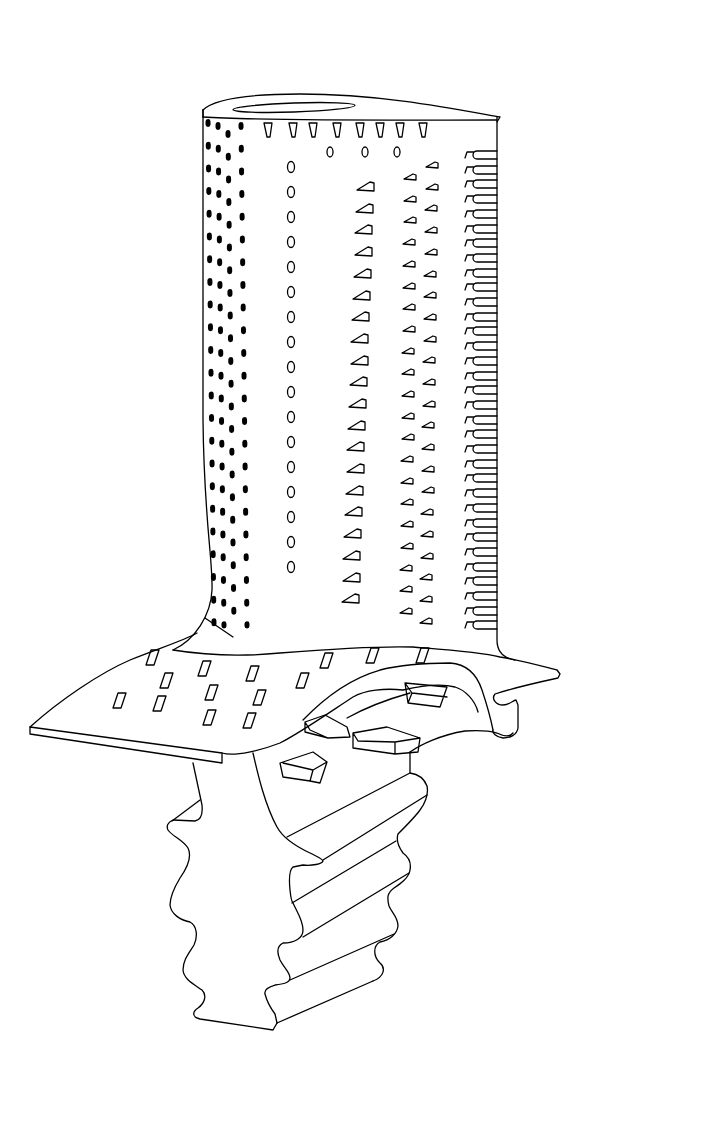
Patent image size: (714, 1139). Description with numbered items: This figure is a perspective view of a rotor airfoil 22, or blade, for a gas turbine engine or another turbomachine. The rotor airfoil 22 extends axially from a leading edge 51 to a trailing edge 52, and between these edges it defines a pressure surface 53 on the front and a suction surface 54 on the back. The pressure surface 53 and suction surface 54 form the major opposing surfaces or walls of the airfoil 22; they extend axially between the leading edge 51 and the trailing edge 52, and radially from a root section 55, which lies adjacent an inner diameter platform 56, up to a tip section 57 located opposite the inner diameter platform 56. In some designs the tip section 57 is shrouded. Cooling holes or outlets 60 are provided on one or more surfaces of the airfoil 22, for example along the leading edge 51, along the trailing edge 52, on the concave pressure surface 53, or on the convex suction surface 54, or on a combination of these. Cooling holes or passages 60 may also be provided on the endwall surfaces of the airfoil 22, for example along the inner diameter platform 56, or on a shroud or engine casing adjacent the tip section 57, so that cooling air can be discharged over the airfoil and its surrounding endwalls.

The rotor airfoil 22 is at (90, 117).
The leading edge 51 is at (203, 275).
The trailing edge 52 is at (500, 393).
The pressure surface 53 is at (322, 400).
The suction surface 54 is at (442, 100).
The root section 55 is at (233, 637).
The inner diameter platform 56 is at (103, 677).
The tip section 57 is at (381, 112).
The cooling holes 60 is at (362, 230).